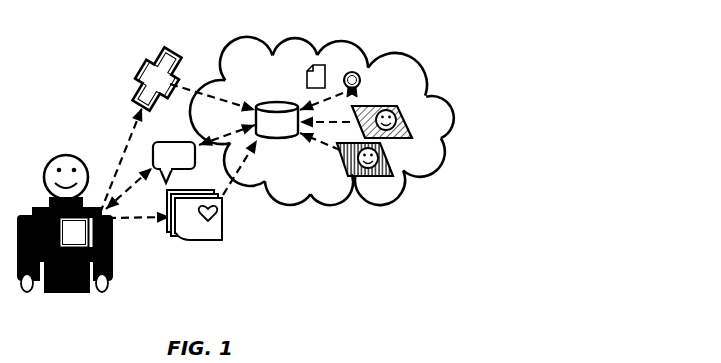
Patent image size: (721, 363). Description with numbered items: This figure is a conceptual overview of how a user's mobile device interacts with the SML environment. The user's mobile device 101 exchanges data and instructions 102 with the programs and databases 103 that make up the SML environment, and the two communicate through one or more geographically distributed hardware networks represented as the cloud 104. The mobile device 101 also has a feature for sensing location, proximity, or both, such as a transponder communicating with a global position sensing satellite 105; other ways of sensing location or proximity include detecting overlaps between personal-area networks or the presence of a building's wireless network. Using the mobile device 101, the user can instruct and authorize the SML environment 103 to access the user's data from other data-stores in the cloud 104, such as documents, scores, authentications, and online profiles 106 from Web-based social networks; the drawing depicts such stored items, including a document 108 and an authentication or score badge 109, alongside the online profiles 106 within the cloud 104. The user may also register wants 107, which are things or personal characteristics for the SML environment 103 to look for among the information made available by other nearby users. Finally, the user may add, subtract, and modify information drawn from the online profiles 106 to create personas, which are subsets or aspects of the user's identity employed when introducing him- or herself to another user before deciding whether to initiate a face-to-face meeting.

The mobile device 101 is at (83, 240).
The data and instructions 102 is at (186, 164).
The programs and databases 103 is at (289, 132).
The cloud 104 is at (296, 201).
The global position sensing satellite 105 is at (134, 86).
The online profiles 106 is at (412, 126).
The wants 107 is at (190, 243).
The document 108 is at (327, 67).
The badge 109 is at (363, 82).